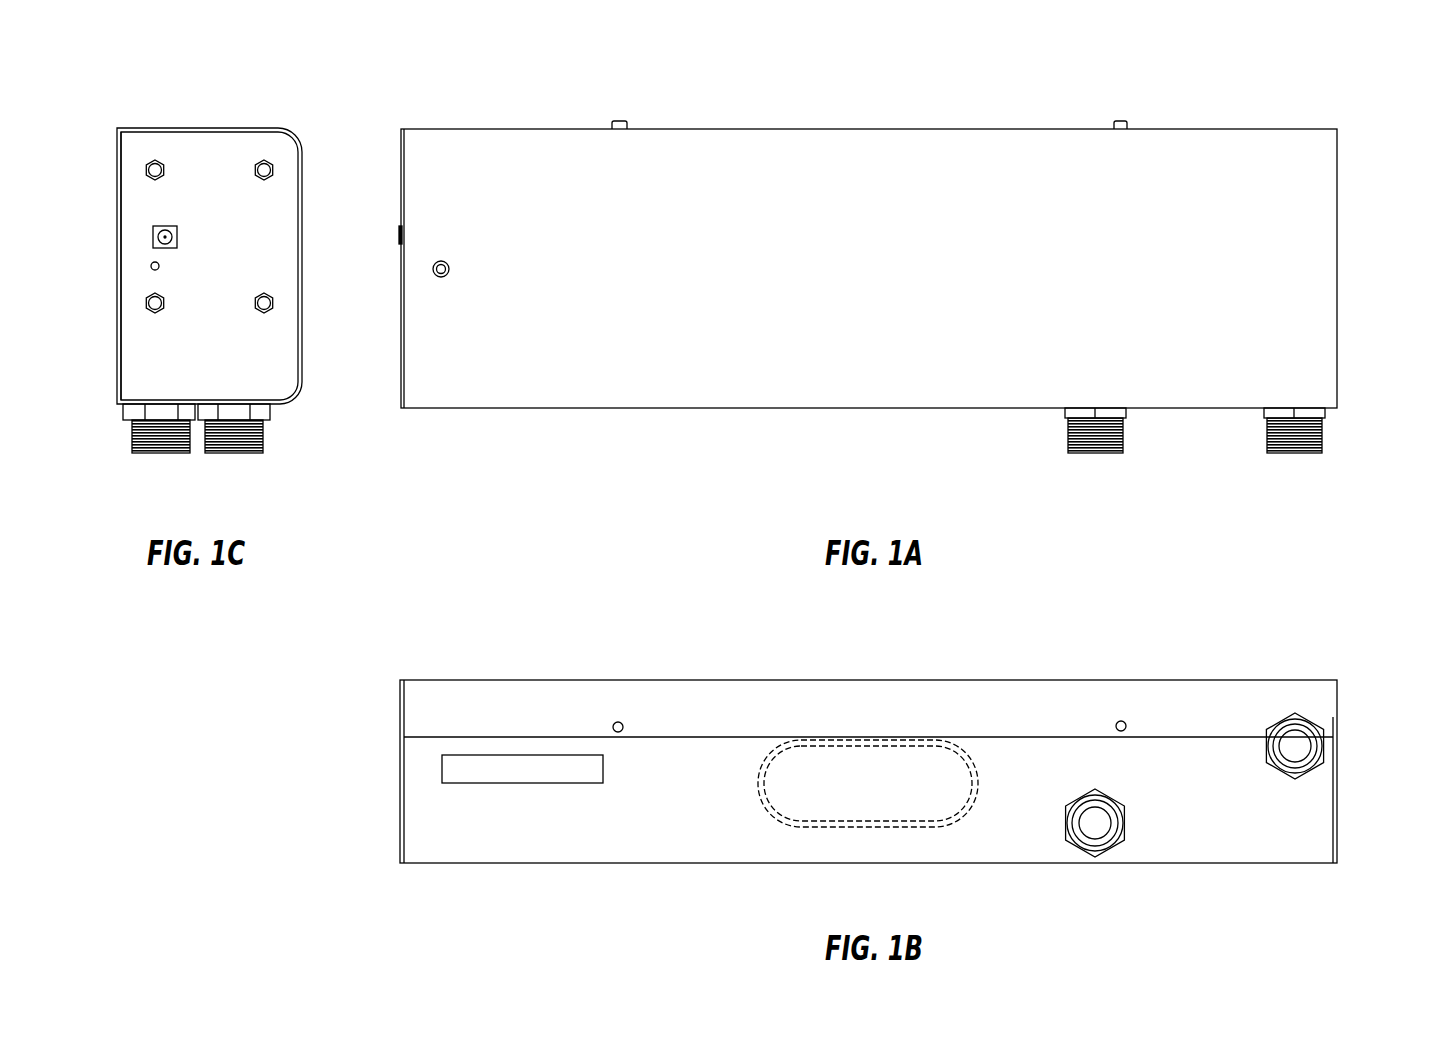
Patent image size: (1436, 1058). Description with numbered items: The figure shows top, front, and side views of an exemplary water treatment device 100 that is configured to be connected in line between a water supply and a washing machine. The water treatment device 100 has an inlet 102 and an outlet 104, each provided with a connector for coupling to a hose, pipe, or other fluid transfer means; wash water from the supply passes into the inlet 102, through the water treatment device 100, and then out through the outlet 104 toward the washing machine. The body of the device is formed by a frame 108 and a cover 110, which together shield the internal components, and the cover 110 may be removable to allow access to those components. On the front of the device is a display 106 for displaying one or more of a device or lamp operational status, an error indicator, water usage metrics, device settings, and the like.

In FIG. 1C, the water treatment device 100 is at (172, 90).
In FIG. 1A, the water treatment device 100 is at (868, 264).
In FIG. 1C, the inlet 102 is at (263, 440).
In FIG. 1A, the inlet 102 is at (1285, 455).
In FIG. 1B, the inlet 102 is at (1302, 746).
In FIG. 1C, the outlet 104 is at (175, 455).
In FIG. 1A, the outlet 104 is at (1088, 455).
In FIG. 1B, the outlet 104 is at (1100, 823).
In FIG. 1B, the display 106 is at (485, 785).
In FIG. 1B, the frame 108 is at (418, 808).
In FIG. 1B, the cover 110 is at (474, 708).